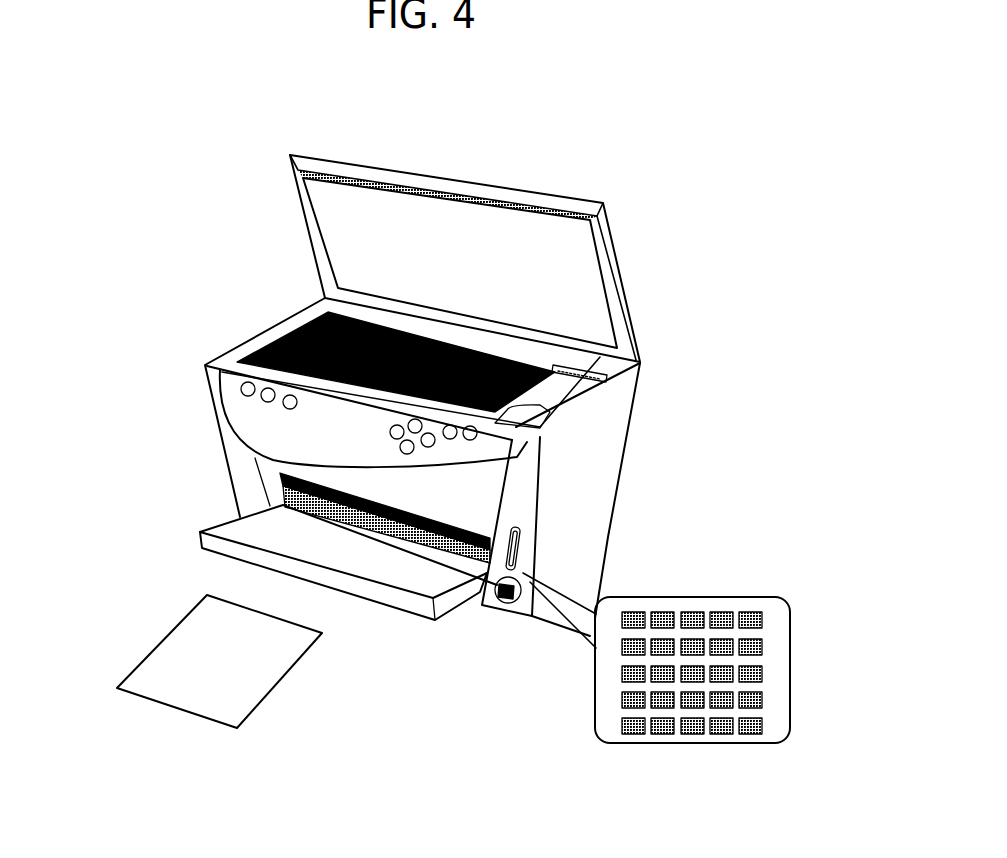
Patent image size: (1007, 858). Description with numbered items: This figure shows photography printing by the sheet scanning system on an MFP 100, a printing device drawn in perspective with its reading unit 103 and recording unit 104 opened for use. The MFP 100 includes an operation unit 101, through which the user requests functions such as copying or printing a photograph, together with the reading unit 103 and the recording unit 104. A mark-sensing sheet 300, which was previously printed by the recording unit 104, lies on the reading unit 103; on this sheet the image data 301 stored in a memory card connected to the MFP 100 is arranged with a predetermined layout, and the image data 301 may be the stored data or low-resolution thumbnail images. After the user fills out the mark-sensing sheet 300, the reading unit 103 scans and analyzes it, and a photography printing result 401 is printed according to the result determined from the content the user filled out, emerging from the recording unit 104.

The MFP 100 is at (424, 109).
The reading unit 103 is at (605, 361).
The mark-sensing sheet 300 is at (305, 323).
The operation unit 101 is at (560, 418).
The recording unit 104 is at (430, 538).
The image data 301 is at (737, 603).
The photography printing result 401 is at (190, 715).